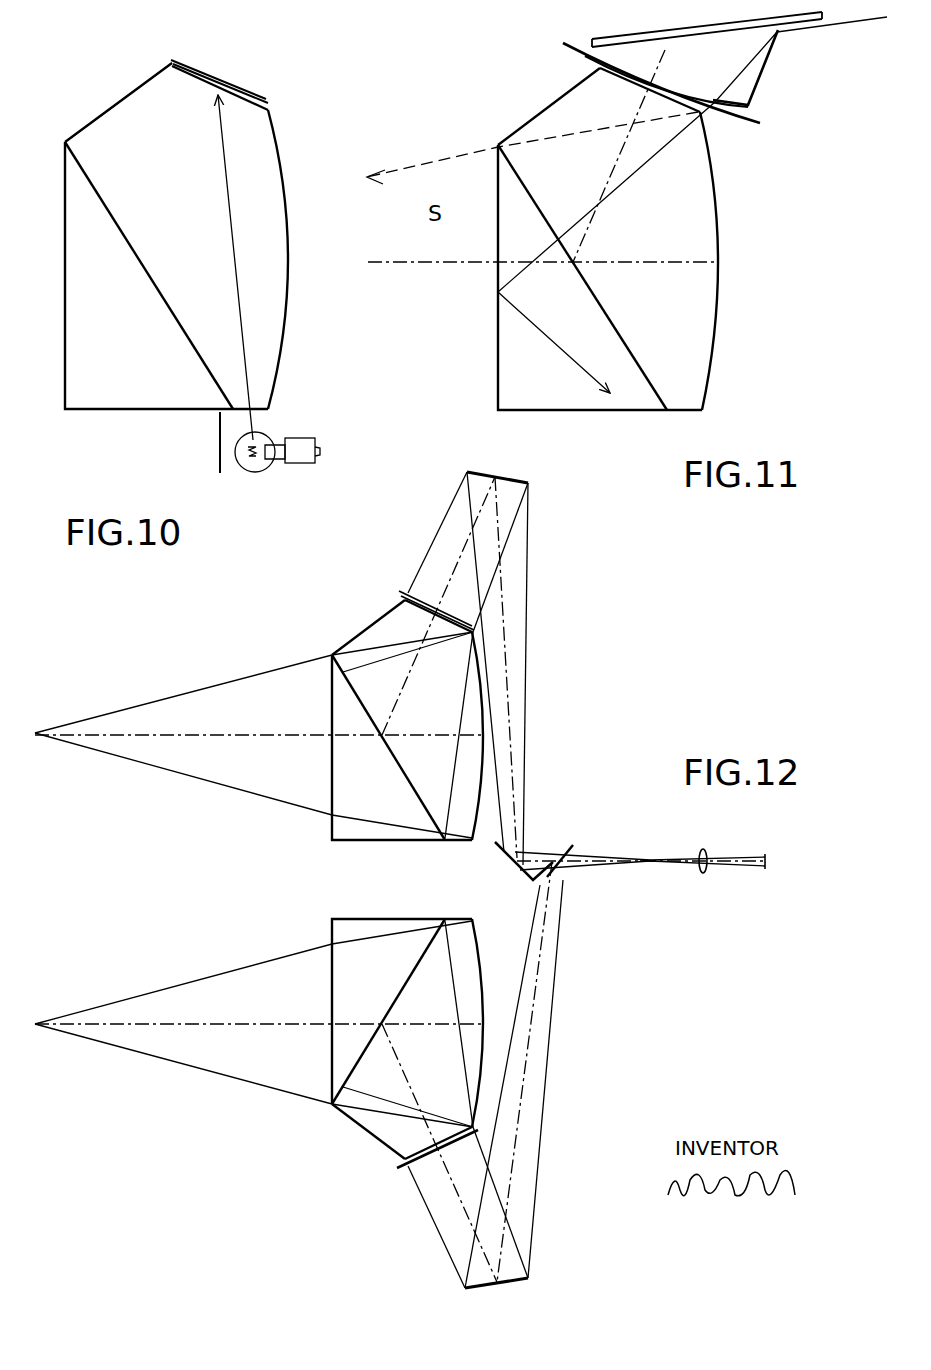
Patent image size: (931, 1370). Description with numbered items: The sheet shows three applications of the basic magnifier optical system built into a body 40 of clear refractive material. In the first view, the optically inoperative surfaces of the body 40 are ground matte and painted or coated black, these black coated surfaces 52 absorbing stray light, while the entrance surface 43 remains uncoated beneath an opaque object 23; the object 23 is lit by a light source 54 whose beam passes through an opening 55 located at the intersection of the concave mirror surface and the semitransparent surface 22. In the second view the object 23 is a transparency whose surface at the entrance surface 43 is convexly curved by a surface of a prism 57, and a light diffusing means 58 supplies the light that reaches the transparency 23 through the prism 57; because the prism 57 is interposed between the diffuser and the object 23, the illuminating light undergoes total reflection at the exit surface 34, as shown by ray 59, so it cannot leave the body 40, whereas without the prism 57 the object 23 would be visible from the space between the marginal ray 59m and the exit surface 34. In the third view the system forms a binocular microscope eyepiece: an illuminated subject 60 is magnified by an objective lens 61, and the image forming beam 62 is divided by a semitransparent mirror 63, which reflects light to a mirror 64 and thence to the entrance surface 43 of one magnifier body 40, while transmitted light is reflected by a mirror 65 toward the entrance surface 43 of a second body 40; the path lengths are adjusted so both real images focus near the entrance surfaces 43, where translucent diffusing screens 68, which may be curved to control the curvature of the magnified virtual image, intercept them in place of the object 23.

In FIG. 10, the semitransparent surface 22 is at (210, 378).
In FIG. 10, the object 23 is at (249, 96).
In FIG. 11, the object 23 is at (753, 120).
In FIG. 11, the exit surface 34 is at (498, 325).
In FIG. 10, the body 40 is at (90, 396).
In FIG. 11, the body 40 is at (518, 386).
In FIG. 12, the body 40 is at (345, 829).
In FIG. 10, the entrance surface 43 is at (170, 66).
In FIG. 11, the entrance surface 43 is at (612, 78).
In FIG. 12, the entrance surface 43 is at (395, 612).
In FIG. 10, the black coated surfaces 52 is at (70, 138).
In FIG. 10, the light source 54 is at (270, 470).
In FIG. 10, the opening 55 is at (262, 413).
In FIG. 11, the prism 57 is at (723, 65).
In FIG. 11, the light diffusing means 58 is at (608, 42).
In FIG. 11, the ray 59 is at (853, 22).
In FIG. 11, the marginal ray 59m is at (432, 157).
In FIG. 12, the illuminated subject 60 is at (767, 871).
In FIG. 12, the objective lens 61 is at (703, 874).
In FIG. 12, the image forming beam 62 is at (646, 868).
In FIG. 12, the semitransparent mirror 63 is at (570, 850).
In FIG. 12, the mirror 64 is at (480, 478).
In FIG. 12, the mirror 65 is at (497, 848).
In FIG. 12, the translucent diffusing screens 68 is at (410, 595).